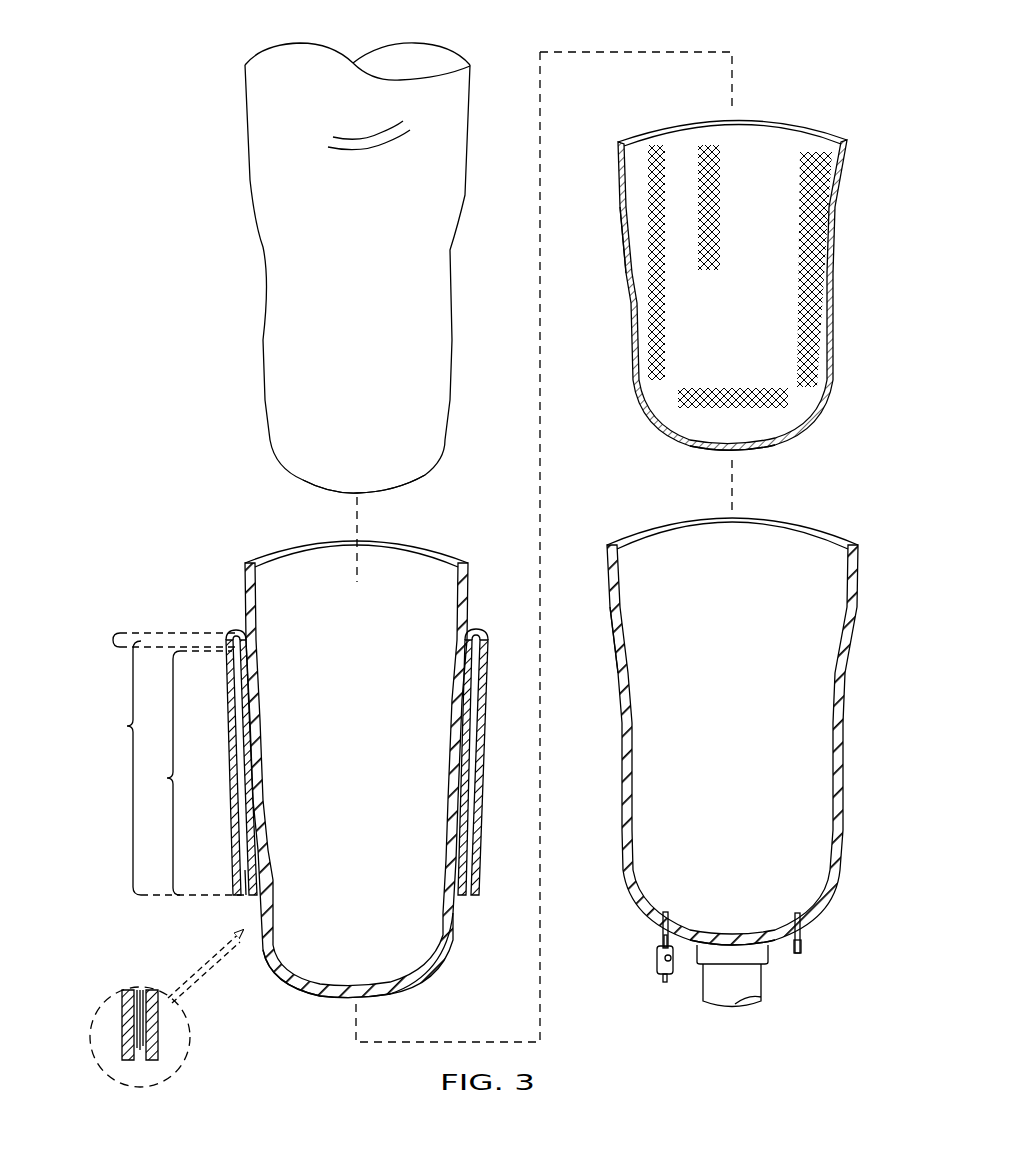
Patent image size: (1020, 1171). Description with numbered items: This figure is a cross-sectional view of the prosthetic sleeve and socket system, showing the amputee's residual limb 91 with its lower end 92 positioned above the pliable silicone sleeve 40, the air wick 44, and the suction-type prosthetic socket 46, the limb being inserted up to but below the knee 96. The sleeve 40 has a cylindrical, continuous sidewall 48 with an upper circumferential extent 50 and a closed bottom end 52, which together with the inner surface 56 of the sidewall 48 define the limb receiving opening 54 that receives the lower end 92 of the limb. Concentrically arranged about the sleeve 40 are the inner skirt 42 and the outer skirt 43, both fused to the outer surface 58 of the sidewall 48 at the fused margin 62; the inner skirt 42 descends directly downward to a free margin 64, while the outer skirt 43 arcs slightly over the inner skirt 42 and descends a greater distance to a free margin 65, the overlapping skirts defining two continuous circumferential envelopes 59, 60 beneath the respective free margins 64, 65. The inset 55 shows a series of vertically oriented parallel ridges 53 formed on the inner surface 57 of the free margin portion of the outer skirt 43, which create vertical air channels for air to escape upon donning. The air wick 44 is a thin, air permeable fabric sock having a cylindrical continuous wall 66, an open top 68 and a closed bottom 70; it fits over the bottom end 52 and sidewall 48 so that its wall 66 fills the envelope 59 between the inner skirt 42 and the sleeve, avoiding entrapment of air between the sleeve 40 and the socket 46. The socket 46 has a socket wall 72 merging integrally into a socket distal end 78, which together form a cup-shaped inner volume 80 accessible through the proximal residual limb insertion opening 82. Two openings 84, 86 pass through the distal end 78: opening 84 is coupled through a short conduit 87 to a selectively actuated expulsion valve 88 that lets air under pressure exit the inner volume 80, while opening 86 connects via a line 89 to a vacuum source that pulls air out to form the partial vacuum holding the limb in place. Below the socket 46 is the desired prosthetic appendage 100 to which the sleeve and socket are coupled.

The sleeve 40 is at (313, 1004).
The inner skirt 42 is at (243, 855).
The outer skirt 43 is at (229, 805).
The air wick 44 is at (628, 311).
The prosthetic socket 46 is at (612, 722).
The sleeve sidewall 48 is at (470, 616).
The upper circumferential extent 50 is at (462, 564).
The closed bottom end 52 is at (385, 995).
The parallel ridges 53 is at (146, 1030).
The limb receiving opening 54 is at (297, 565).
The inset 55 is at (186, 1078).
The inner surface 56 is at (456, 590).
The inner surface of free margin portion 57 is at (246, 900).
The outer surface 58 is at (275, 968).
The circumferential envelope 59 is at (455, 915).
The circumferential envelope 60 is at (470, 858).
The fused margin 62 is at (158, 642).
The free margin 64 is at (184, 773).
The free margin 65 is at (171, 768).
The cylindrical continuous wall 66 is at (624, 218).
The open top 68 is at (677, 128).
The closed bottom 70 is at (686, 437).
The socket wall 72 is at (612, 606).
The socket distal end 78 is at (775, 945).
The inner volume 80 is at (667, 560).
The proximal residual limb insertion opening 82 is at (795, 535).
The opening 84 is at (666, 912).
The opening 86 is at (797, 912).
The short conduit 87 is at (655, 940).
The expulsion valve 88 is at (658, 962).
The line 89 is at (803, 950).
The residual limb 91 is at (250, 250).
The lower end 92 is at (413, 476).
The knee 96 is at (425, 142).
The prosthetic appendage 100 is at (698, 985).